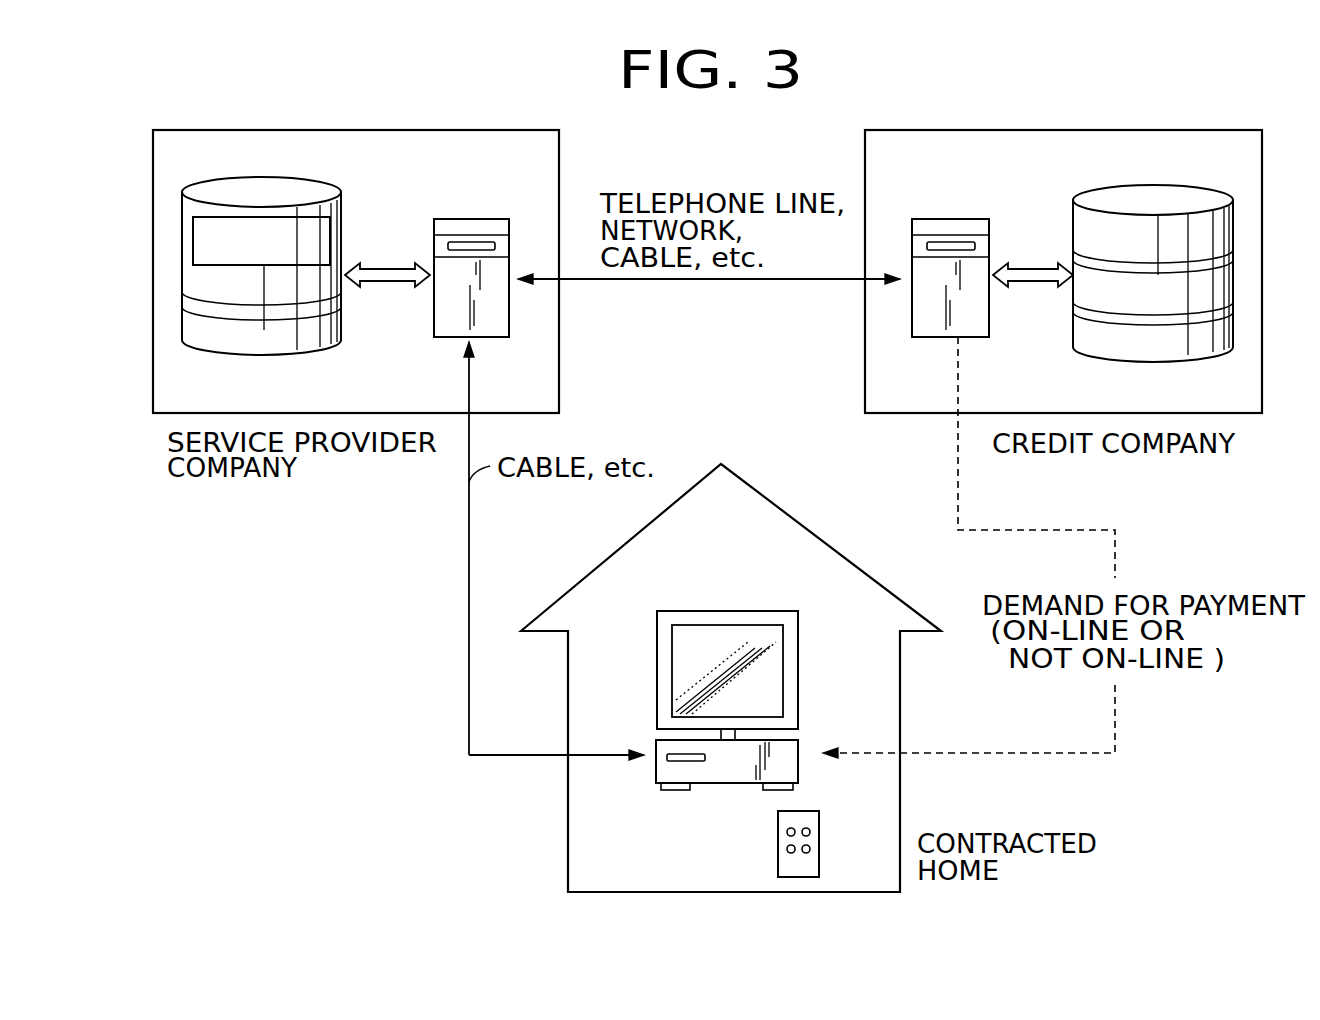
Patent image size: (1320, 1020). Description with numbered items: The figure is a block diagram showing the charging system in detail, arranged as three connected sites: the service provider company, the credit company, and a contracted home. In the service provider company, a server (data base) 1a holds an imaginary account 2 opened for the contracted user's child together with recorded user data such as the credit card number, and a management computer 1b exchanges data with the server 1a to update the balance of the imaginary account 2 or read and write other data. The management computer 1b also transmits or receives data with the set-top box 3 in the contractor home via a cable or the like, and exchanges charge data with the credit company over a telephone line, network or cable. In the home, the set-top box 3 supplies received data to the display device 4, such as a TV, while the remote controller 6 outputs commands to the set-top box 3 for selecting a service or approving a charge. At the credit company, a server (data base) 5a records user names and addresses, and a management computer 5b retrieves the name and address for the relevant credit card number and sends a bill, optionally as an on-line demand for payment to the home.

The server (data base) of the service provider company 1a is at (215, 357).
The management computer 1b is at (446, 339).
The imaginary account 2 is at (332, 229).
The set-top box 3 is at (656, 772).
The display device 4 is at (703, 611).
The server (data base) of the credit company 5a is at (1093, 358).
The management computer of the credit company 5b is at (942, 340).
The remote controller 6 is at (778, 852).